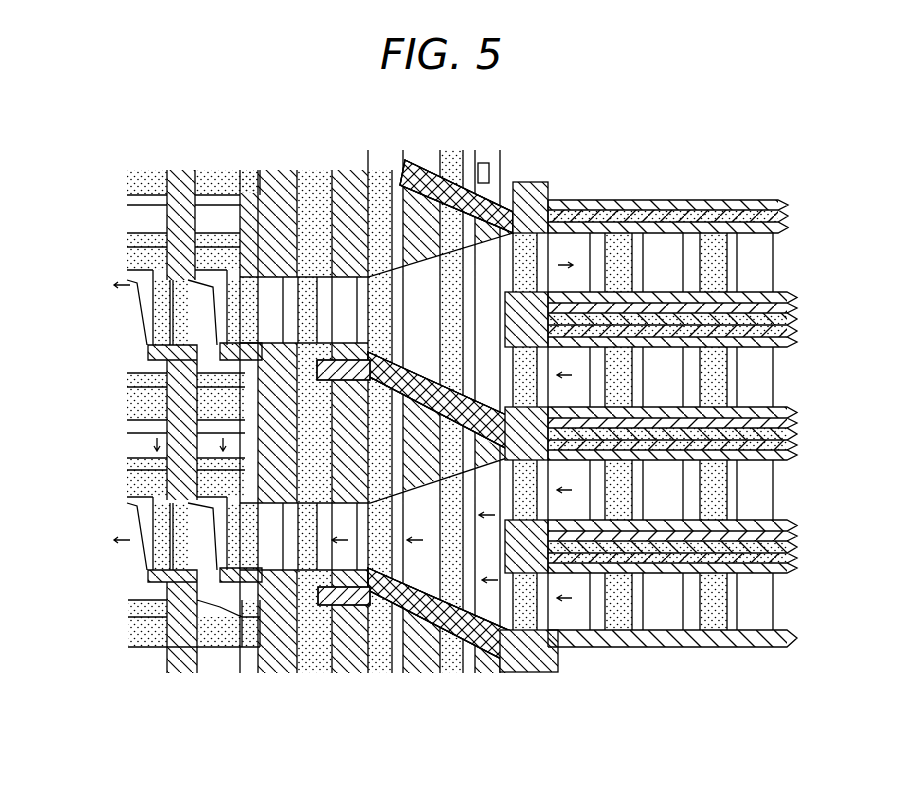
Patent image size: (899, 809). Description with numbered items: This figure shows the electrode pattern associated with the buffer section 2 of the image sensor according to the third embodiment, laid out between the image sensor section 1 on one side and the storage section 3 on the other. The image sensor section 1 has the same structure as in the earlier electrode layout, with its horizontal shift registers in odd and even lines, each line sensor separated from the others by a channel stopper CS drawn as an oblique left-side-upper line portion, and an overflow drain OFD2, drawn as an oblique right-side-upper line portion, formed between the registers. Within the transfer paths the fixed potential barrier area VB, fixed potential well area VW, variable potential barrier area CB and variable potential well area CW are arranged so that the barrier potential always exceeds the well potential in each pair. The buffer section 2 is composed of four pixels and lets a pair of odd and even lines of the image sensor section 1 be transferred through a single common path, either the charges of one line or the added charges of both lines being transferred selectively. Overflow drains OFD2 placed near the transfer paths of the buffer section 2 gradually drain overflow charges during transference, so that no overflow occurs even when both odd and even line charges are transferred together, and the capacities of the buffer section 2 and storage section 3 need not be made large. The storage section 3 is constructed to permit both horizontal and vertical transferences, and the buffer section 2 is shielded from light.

The image sensor section 1 is at (540, 148).
The buffer section 2 is at (540, 148).
The storage section 3 is at (240, 148).
The channel stopper CS is at (795, 647).
The fixed potential barrier area VB is at (490, 180).
The variable potential well area CW is at (450, 265).
The variable potential barrier area CB is at (470, 270).
The fixed potential well area VW is at (410, 276).
The overflow drain OFD2 is at (557, 205).